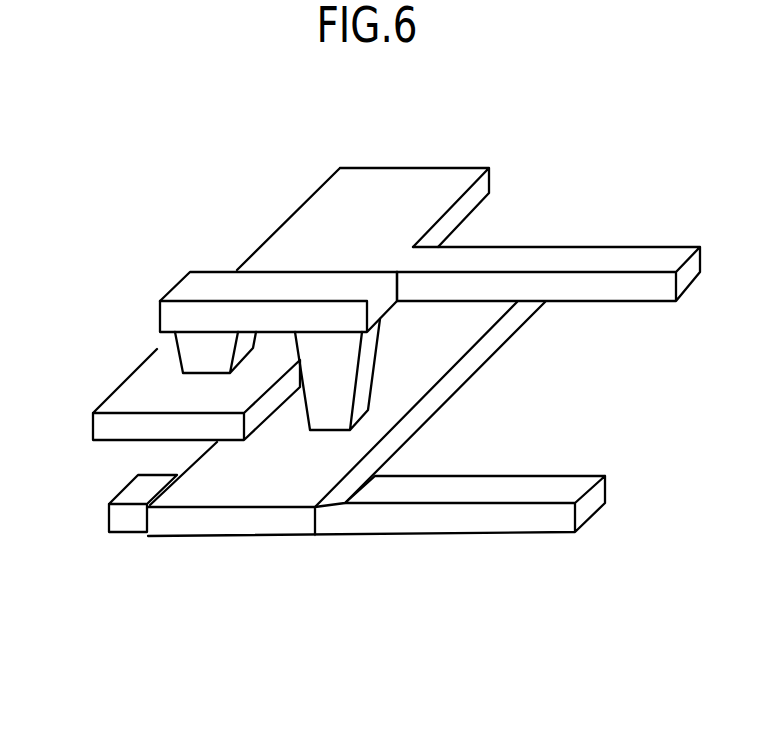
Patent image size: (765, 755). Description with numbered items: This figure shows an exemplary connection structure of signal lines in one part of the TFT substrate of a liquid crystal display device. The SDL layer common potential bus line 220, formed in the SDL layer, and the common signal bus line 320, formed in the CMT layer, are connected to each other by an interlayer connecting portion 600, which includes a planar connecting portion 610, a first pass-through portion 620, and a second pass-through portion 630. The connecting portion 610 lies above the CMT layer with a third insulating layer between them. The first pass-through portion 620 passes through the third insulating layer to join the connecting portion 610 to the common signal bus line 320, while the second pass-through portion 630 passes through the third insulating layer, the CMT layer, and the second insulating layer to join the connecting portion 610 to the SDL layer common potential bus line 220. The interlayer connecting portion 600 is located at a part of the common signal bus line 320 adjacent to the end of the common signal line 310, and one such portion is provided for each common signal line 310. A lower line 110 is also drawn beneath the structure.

The first lower wiring 110 is at (508, 535).
The SDL layer common potential bus line 220 is at (496, 352).
The common signal line 310 is at (627, 247).
The common signal bus line 320 is at (433, 167).
The interlayer connecting portion 600 is at (205, 269).
The planar connecting portion 610 is at (252, 282).
The first pass-through portion 620 is at (195, 349).
The second pass-through portion 630 is at (345, 372).